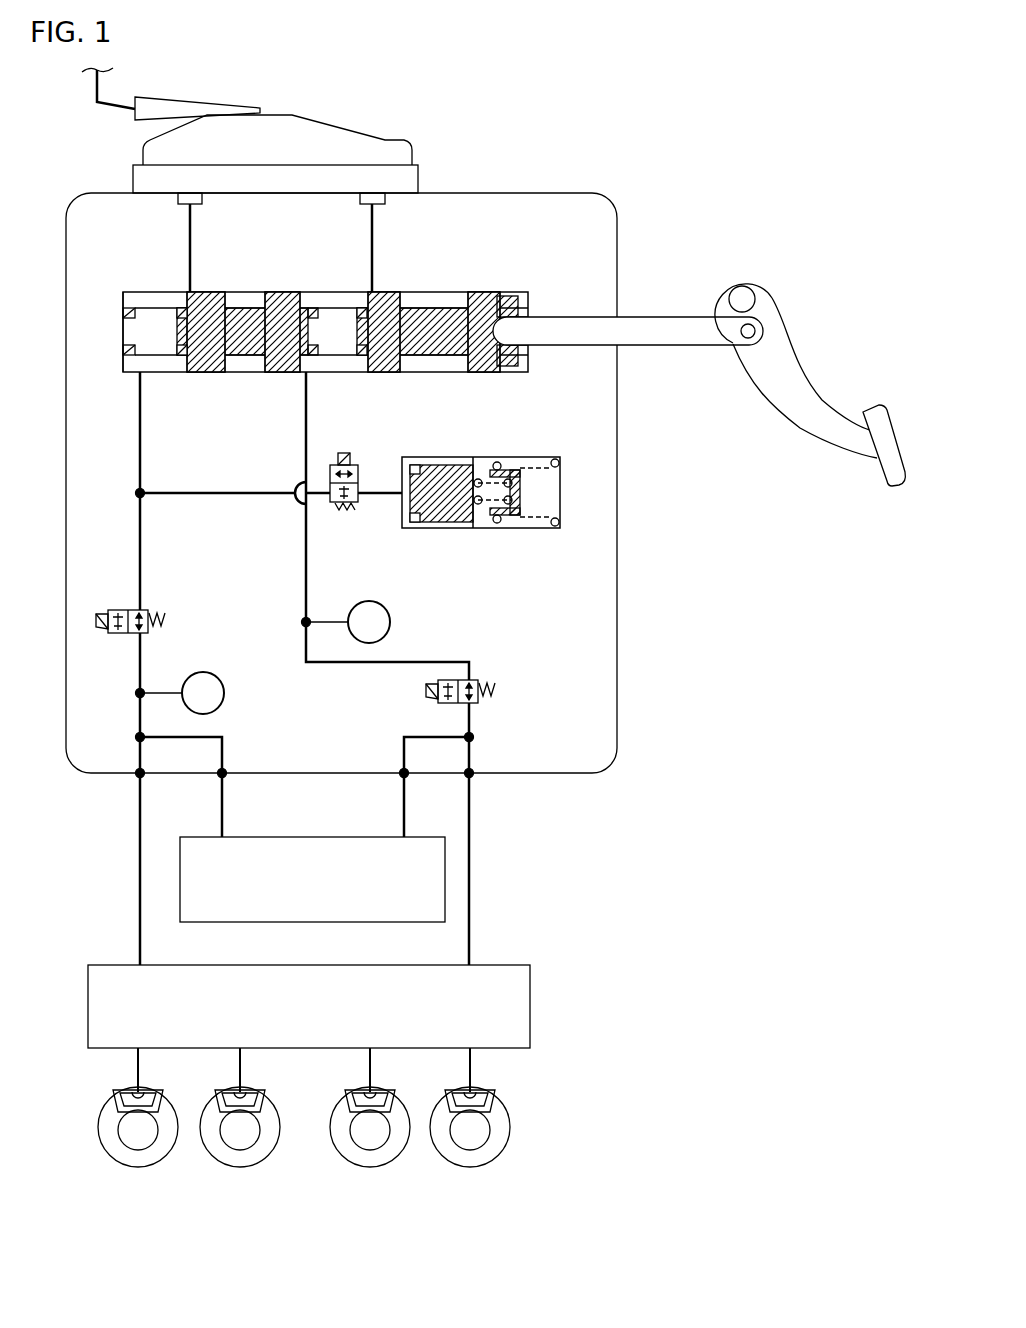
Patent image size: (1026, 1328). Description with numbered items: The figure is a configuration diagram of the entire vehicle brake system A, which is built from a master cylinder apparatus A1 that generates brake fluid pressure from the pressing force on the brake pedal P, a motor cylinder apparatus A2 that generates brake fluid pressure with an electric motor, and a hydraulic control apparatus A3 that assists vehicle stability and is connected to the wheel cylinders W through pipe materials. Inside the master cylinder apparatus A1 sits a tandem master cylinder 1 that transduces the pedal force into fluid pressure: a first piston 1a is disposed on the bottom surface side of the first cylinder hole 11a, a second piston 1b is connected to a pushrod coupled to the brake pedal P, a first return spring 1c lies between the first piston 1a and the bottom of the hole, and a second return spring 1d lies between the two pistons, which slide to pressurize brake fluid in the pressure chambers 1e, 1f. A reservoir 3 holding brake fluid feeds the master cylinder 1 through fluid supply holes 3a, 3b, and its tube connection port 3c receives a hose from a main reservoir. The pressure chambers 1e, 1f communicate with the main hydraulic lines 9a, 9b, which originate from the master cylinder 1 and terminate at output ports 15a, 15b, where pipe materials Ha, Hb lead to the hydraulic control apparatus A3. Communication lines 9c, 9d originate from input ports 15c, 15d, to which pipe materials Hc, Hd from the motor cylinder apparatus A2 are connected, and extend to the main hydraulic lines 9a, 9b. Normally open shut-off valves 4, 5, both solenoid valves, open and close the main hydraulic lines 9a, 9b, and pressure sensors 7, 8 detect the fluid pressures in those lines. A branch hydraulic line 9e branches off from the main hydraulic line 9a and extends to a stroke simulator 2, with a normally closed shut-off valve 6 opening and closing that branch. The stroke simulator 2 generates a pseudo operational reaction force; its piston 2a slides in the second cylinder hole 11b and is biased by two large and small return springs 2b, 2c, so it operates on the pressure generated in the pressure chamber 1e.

The vehicle brake system A is at (520, 175).
The master cylinder apparatus A1 is at (618, 680).
The motor cylinder apparatus A2 is at (298, 877).
The hydraulic control apparatus A3 is at (296, 1005).
The tandem master cylinder 1 is at (301, 328).
The first piston 1a is at (250, 340).
The second piston 1b is at (440, 335).
The first return spring 1c is at (168, 360).
The second return spring 1d is at (350, 360).
The pressure chamber 1e is at (157, 343).
The pressure chamber 1f is at (338, 343).
The stroke simulator 2 is at (508, 494).
The piston 2a is at (452, 510).
The return spring 2b is at (489, 505).
The return spring 2c is at (543, 518).
The reservoir 3 is at (325, 114).
The fluid supply hole 3a is at (190, 208).
The fluid supply hole 3b is at (372, 208).
The tube connection port 3c is at (172, 97).
The normally open shut-off valve 4 is at (149, 631).
The normally open shut-off valve 5 is at (479, 702).
The normally closed shut-off valve 6 is at (336, 501).
The pressure sensor 7 is at (180, 693).
The pressure sensor 8 is at (346, 622).
The main hydraulic line 9a is at (142, 549).
The main hydraulic line 9b is at (305, 581).
The communication hydraulic line 9c is at (222, 737).
The communication hydraulic line 9d is at (430, 737).
The branch hydraulic line 9e is at (250, 495).
The first cylinder hole 11a is at (140, 302).
The second cylinder hole 11b is at (536, 460).
The output port 15a is at (139, 772).
The output port 15b is at (471, 772).
The input port 15c is at (224, 772).
The input port 15d is at (403, 772).
The pipe material Ha is at (139, 812).
The pipe material Hb is at (471, 812).
The pipe material Hc is at (224, 812).
The pipe material Hd is at (403, 812).
The brake pedal P is at (876, 474).
The wheel cylinder W is at (311, 1107).